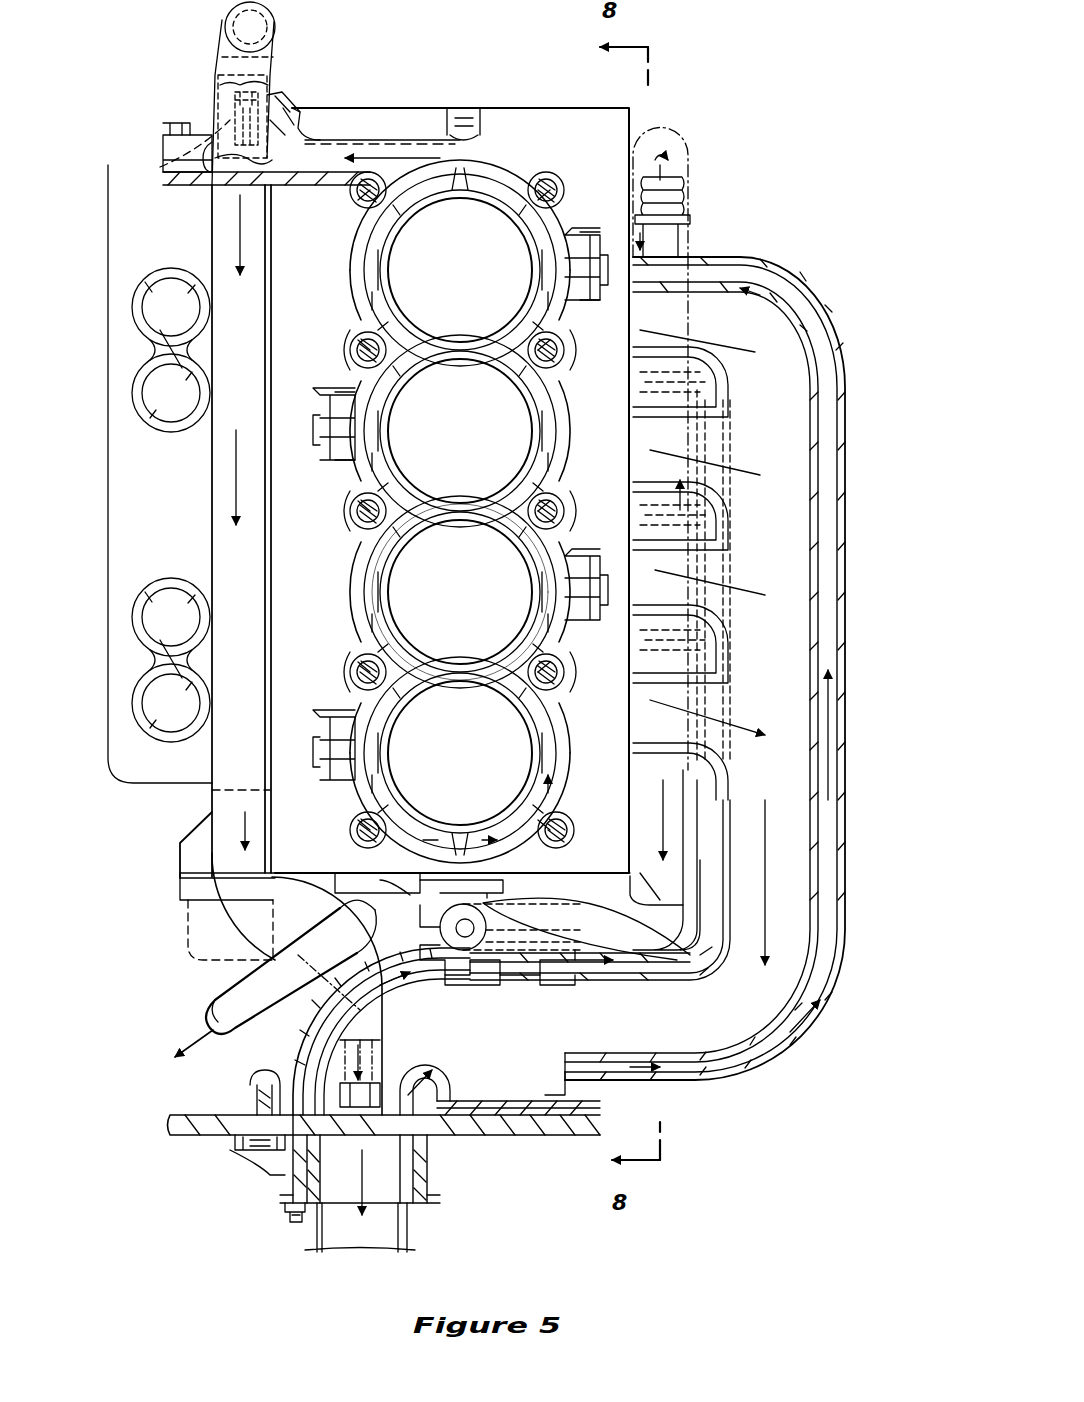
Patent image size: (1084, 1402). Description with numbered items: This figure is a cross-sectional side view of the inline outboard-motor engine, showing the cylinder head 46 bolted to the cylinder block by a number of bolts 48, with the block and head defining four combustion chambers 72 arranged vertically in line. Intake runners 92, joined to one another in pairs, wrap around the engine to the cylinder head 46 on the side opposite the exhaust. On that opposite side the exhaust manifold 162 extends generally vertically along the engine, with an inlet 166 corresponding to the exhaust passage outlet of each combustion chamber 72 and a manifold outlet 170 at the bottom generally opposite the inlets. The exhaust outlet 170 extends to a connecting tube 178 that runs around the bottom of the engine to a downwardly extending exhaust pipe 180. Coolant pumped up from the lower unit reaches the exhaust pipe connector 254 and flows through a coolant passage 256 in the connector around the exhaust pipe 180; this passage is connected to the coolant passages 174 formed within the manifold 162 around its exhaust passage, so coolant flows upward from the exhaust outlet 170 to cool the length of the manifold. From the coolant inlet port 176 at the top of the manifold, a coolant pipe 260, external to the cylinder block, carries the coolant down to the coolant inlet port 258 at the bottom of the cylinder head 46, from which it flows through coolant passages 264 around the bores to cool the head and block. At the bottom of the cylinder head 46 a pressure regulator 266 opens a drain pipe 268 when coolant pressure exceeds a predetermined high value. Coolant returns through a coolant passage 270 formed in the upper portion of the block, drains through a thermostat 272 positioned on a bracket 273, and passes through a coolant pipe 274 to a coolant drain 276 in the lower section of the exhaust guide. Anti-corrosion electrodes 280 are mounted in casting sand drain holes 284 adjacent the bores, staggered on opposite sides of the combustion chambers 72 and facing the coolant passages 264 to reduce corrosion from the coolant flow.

The cylinder head 46 is at (245, 835).
The bolt 48 is at (546, 176).
The combustion chamber 72 is at (562, 222).
The runner 92 is at (200, 322).
The exhaust manifold 162 is at (815, 222).
The inlet 166 is at (680, 308).
The manifold outlet 170 is at (640, 1040).
The coolant passage 174 is at (840, 820).
The coolant inlet port 176 is at (682, 190).
The connecting tube 178 is at (455, 1105).
The exhaust pipe 180 is at (410, 1232).
The exhaust pipe connector 254 is at (250, 1178).
The coolant passage 256 is at (420, 1185).
The coolant inlet port 258 is at (630, 945).
The coolant pipe 260 is at (710, 940).
The coolant passage 264 is at (370, 595).
The pressure regulator 266 is at (365, 878).
The drain pipe 268 is at (205, 1000).
The coolant passage 270 is at (335, 145).
The thermostat 272 is at (213, 108).
The bracket 273 is at (310, 140).
The coolant pipe 274 is at (222, 505).
The coolant drain 276 is at (300, 1050).
The anti-corrosion electrode 280 is at (352, 350).
The sand drain hole 284 is at (640, 230).